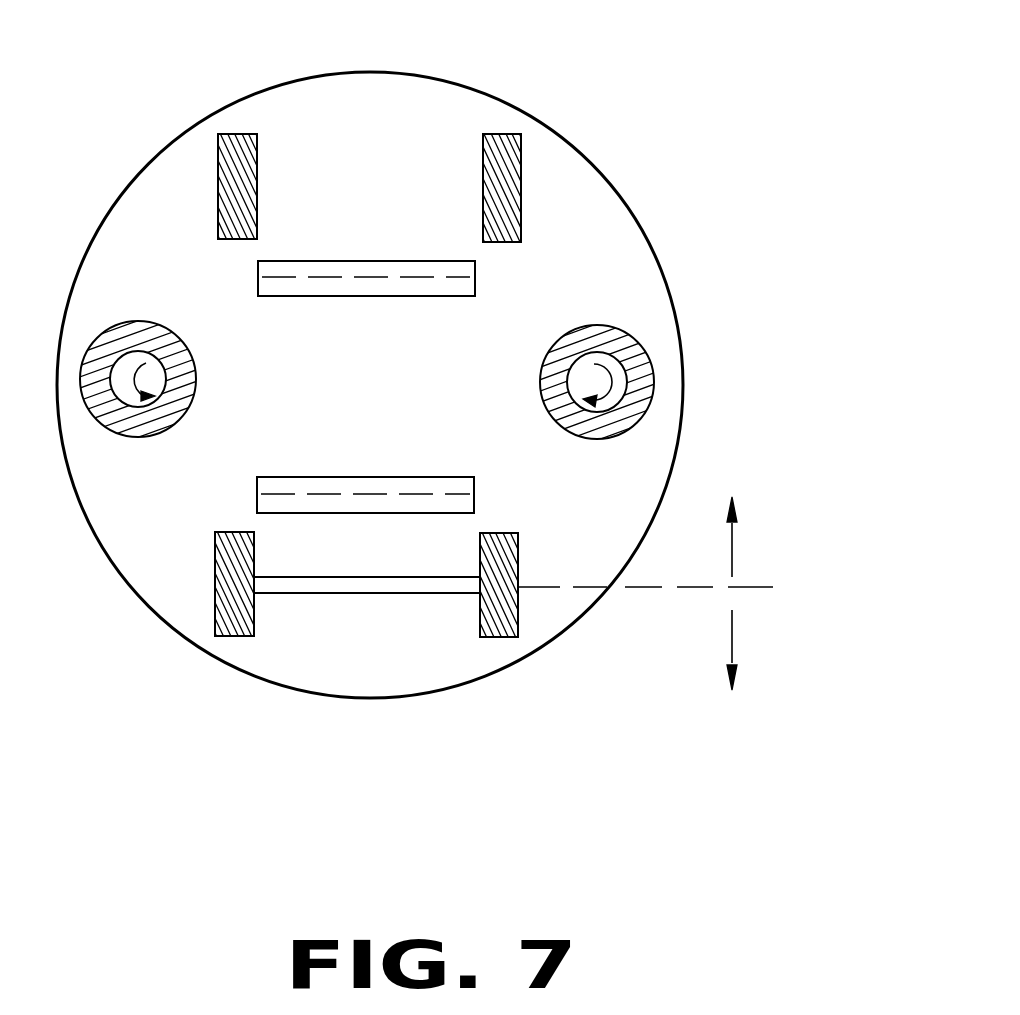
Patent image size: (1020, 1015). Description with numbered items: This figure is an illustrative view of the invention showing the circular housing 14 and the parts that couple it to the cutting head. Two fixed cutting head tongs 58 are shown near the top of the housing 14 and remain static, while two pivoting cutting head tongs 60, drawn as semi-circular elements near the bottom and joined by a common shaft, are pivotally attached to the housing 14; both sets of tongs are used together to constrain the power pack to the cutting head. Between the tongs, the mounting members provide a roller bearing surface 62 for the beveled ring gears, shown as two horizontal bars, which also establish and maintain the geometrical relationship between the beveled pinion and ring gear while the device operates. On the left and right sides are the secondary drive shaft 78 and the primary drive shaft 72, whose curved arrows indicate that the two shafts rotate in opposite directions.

The housing 14 is at (683, 400).
The fixed cutting head tongs 58 is at (257, 137).
The pivoting cutting head tongs 60 is at (245, 635).
The roller bearing surface 62 is at (412, 295).
The primary drive shaft 72 is at (620, 328).
The secondary drive shaft 78 is at (133, 322).